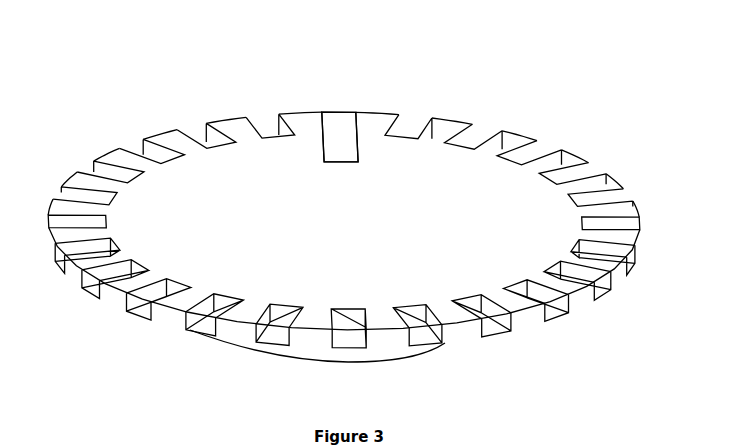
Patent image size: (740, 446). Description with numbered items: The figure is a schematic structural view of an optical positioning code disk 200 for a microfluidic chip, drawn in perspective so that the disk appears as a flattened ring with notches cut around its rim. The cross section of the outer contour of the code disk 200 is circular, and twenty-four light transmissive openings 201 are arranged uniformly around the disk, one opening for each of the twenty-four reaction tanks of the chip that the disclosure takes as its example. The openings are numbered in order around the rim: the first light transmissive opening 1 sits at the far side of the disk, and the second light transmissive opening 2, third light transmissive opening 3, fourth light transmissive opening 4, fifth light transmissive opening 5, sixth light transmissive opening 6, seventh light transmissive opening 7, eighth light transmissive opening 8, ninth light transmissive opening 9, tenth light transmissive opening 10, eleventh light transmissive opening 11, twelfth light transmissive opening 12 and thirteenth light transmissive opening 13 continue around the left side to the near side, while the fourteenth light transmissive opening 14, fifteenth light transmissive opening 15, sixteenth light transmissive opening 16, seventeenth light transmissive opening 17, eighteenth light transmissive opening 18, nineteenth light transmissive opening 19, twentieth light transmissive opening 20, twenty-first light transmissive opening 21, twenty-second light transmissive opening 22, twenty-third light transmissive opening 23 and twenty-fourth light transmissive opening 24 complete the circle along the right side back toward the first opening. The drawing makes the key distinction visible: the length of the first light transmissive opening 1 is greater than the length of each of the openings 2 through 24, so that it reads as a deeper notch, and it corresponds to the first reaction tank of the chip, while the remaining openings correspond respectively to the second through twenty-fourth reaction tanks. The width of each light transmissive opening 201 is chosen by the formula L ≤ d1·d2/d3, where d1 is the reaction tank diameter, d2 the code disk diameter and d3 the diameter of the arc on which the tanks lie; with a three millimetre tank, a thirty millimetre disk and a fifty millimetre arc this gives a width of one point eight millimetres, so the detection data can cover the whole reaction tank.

The first light transmissive opening 1 is at (340, 137).
The second light transmissive opening 2 is at (270, 136).
The third light transmissive opening 3 is at (208, 144).
The fourth light transmissive opening 4 is at (157, 159).
The fifth light transmissive opening 5 is at (119, 176).
The sixth light transmissive opening 6 is at (98, 198).
The seventh light transmissive opening 7 is at (92, 224).
The eighth light transmissive opening 8 is at (100, 252).
The ninth light transmissive opening 9 is at (124, 273).
The tenth light transmissive opening 10 is at (163, 288).
The eleventh light transmissive opening 11 is at (216, 304).
The twelfth light transmissive opening 12 is at (279, 313).
The thirteenth light transmissive opening 13 is at (348, 316).
The fourteenth light transmissive opening 14 is at (417, 314).
The fifteenth light transmissive opening 15 is at (480, 306).
The sixteenth light transmissive opening 16 is at (535, 291).
The seventeenth light transmissive opening 17 is at (569, 274).
The eighteenth light transmissive opening 18 is at (588, 251).
The nineteenth light transmissive opening 19 is at (593, 219).
The twentieth light transmissive opening 20 is at (586, 198).
The twenty-first light transmissive opening 21 is at (562, 179).
The twenty-second light transmissive opening 22 is at (522, 161).
The twenty-third light transmissive opening 23 is at (472, 147).
The twenty-fourth light transmissive opening 24 is at (408, 137).
The optical positioning code disk 200 is at (500, 140).
The light transmissive opening 201 is at (342, 123).